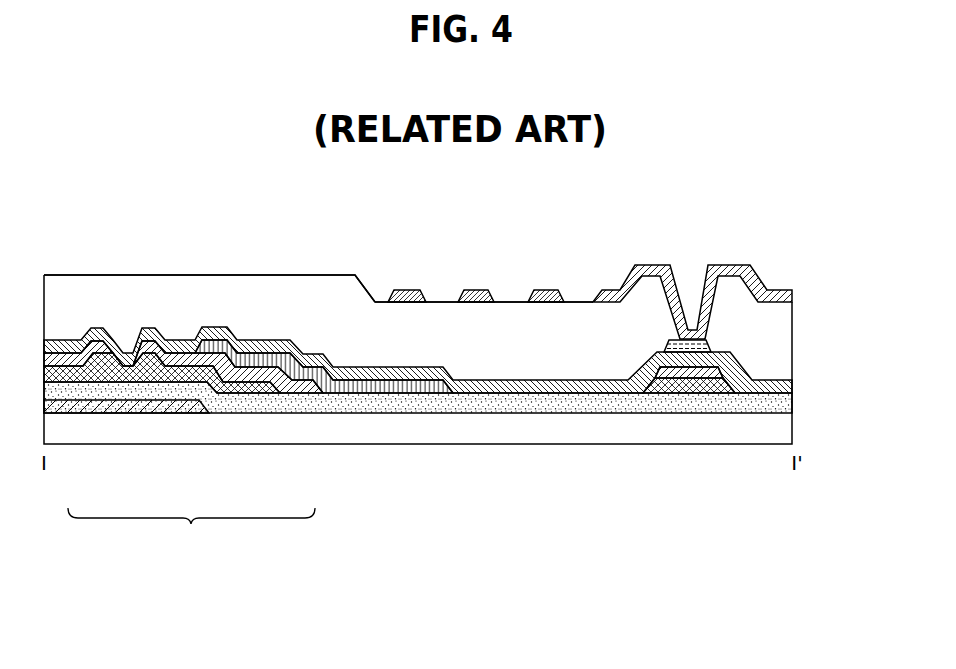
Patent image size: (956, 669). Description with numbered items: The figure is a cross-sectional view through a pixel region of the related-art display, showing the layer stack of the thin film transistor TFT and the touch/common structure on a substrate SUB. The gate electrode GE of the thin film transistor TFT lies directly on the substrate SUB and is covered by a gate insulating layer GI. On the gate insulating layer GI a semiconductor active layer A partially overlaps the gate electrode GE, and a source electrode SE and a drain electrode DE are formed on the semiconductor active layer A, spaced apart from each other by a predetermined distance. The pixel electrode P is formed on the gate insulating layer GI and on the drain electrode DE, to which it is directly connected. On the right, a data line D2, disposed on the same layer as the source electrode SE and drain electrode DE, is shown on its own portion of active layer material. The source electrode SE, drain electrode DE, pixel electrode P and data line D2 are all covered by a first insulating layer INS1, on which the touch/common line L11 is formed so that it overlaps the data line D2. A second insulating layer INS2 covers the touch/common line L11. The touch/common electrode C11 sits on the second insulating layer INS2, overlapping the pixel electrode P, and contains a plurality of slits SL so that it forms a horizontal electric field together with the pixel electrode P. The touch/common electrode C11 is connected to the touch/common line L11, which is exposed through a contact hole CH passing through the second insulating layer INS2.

The source electrode SE is at (72, 358).
The gate electrode GE is at (145, 407).
The semiconductor active layer A is at (230, 388).
The drain electrode DE is at (300, 386).
The pixel electrode P is at (385, 390).
The substrate SUB is at (470, 428).
The gate insulating layer GI is at (560, 405).
The data line D2 is at (677, 372).
The first insulating layer INS1 is at (780, 387).
The second insulating layer INS2 is at (780, 338).
The touch/common electrode C11 is at (402, 291).
The slit SL is at (437, 298).
The contact hole CH is at (688, 277).
The touch/common line L11 is at (710, 348).
The thin film transistor TFT is at (191, 530).